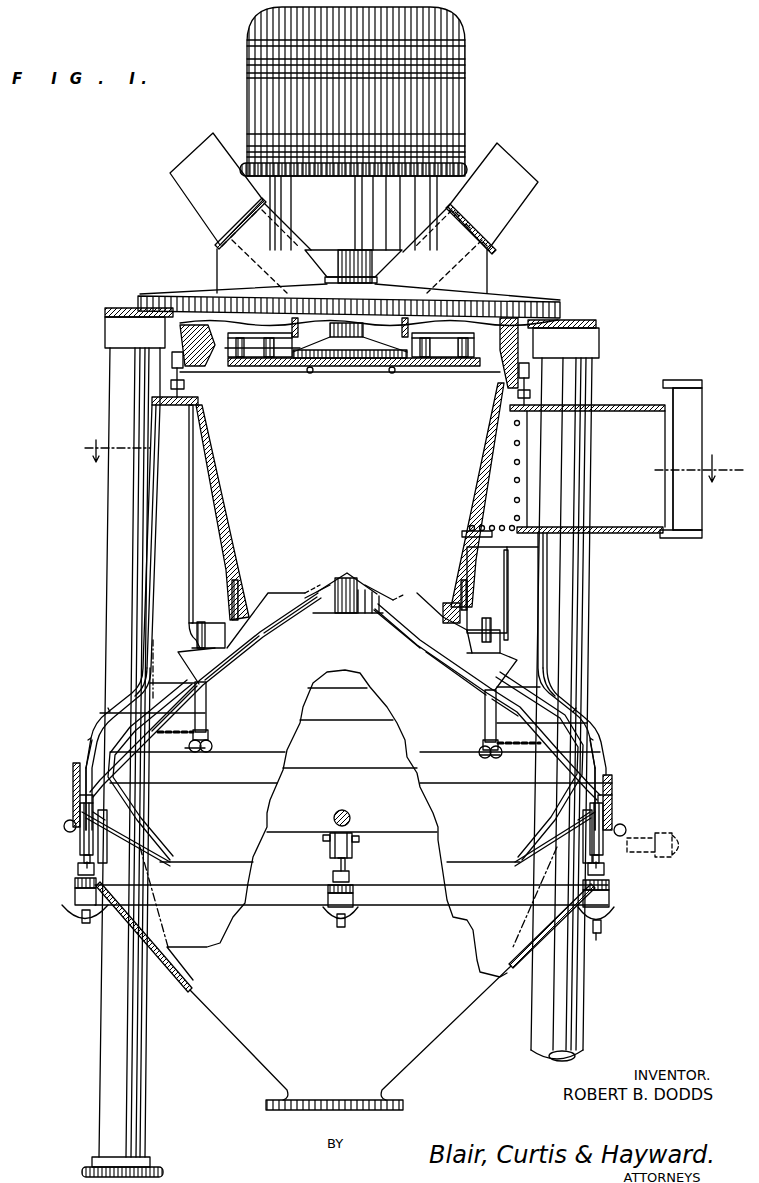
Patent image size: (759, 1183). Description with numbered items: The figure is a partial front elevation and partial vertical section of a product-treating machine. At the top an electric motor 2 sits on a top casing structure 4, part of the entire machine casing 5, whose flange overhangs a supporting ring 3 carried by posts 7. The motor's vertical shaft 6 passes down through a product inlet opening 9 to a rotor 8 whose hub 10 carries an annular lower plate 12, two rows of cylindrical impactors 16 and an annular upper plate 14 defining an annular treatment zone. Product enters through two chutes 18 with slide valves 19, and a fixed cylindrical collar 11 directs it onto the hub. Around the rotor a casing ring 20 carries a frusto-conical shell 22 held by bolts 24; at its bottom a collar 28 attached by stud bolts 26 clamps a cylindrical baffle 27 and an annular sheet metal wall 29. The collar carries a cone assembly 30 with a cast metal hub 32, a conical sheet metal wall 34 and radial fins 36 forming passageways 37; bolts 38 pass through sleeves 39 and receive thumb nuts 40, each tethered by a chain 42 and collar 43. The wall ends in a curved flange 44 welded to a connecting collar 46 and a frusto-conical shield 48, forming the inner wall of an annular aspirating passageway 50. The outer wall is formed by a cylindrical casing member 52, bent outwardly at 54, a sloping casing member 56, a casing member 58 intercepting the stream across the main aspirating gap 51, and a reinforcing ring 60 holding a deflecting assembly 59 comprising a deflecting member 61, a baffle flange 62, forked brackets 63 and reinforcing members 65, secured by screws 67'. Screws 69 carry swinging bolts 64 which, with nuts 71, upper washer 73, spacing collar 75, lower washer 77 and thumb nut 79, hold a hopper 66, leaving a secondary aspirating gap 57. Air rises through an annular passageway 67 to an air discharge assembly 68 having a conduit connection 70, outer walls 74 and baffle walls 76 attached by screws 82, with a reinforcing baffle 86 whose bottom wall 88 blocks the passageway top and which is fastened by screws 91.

The electric motor 2 is at (466, 110).
The supporting ring 3 is at (128, 307).
The top casing structure 4 is at (498, 296).
The machine casing 5 is at (149, 507).
The vertical shaft 6 is at (345, 335).
The posts 7 is at (590, 375).
The rotor 8 is at (290, 367).
The product inlet opening 9 is at (322, 340).
The hub 10 is at (368, 352).
The cylindrical collar 11 is at (263, 305).
The annular lower plate 12 is at (448, 366).
The annular upper plate 14 is at (273, 373).
The cylindrical impactors 16 is at (232, 346).
The chutes 18 is at (175, 183).
The slide valves 19 is at (214, 233).
The casing ring 20 is at (206, 362).
The frusto-conical shell 22 is at (234, 520).
The bolts 24 is at (170, 378).
The stud bolts 26 is at (246, 600).
The cylindrical baffle 27 is at (192, 560).
The collar 28 is at (202, 638).
The annular sheet metal wall 29 is at (176, 406).
The cone assembly 30 is at (360, 576).
The cast metal hub 32 is at (346, 573).
The conical sheet metal wall 34 is at (290, 625).
The radial fins 36 is at (300, 597).
The passageways 37 is at (243, 639).
The bolts 38 is at (198, 628).
The sleeves 39 is at (210, 700).
The thumb nuts 40 is at (209, 743).
The chain 42 is at (200, 750).
The collar 43 is at (210, 730).
The downwardly curved flange 44 is at (160, 755).
The connecting collar 46 is at (120, 776).
The frusto-conical shield 48 is at (195, 880).
The annular aspirating passageway 50 is at (86, 763).
The main aspirating gap 51 is at (80, 738).
The cylindrical casing member 52 is at (152, 547).
The outwardly bent lower edge 54 is at (138, 680).
The frusto-conical casing member 56 is at (115, 705).
The secondary aspirating gap 57 is at (130, 840).
The casing member 58 is at (88, 720).
The deflecting assembly 59 is at (142, 862).
The reinforcing ring 60 is at (72, 776).
The deflecting member 61 is at (78, 800).
The baffle flange 62 is at (104, 850).
The forked brackets 63 is at (78, 840).
The swinging bolts 64 is at (84, 917).
The reinforcing members 65 is at (106, 815).
The hopper 66 is at (430, 1072).
The annular passageway 67 is at (348, 638).
The screws 67' is at (359, 815).
The air discharge assembly 68 is at (680, 404).
The screw 69 is at (84, 855).
The cylindrical conduit connection 70 is at (703, 522).
The nuts 71 is at (78, 870).
The upper washer 73 is at (76, 886).
The outer wall 74 is at (636, 412).
The spacing collar 75 is at (74, 896).
The inner baffle wall 76 is at (702, 388).
The lower washer 77 is at (106, 905).
The thumb nut 79 is at (86, 926).
The screws 82 is at (522, 462).
The reinforcing baffle 86 is at (528, 563).
The bottom wall 88 is at (502, 576).
The screws 91 is at (504, 526).